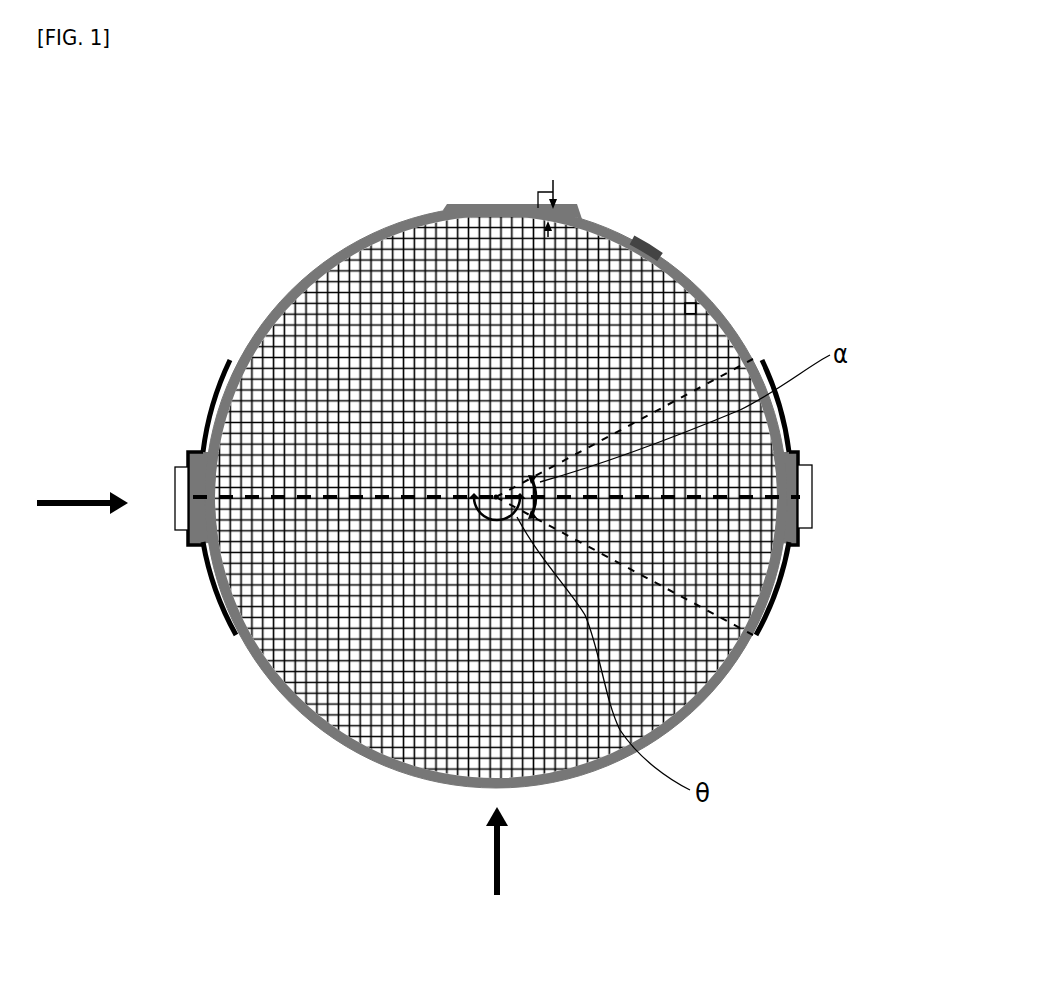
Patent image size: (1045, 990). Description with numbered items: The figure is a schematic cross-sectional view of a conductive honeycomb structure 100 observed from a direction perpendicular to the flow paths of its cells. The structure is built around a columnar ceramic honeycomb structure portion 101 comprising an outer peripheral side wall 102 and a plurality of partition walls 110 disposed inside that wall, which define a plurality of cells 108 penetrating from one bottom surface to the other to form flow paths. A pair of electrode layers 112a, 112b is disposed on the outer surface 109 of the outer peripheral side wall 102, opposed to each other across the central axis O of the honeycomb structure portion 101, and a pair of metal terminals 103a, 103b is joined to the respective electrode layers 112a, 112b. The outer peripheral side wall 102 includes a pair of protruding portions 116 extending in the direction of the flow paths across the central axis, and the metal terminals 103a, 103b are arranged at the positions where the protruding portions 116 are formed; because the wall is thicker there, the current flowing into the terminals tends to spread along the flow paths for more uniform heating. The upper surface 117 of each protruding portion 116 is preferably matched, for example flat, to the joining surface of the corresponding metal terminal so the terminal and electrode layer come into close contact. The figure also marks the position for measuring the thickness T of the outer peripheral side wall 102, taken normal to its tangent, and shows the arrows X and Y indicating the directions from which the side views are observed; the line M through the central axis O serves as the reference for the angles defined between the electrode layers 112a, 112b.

The honeycomb structure 100 is at (262, 129).
The honeycomb structure portion 101 is at (239, 332).
The outer peripheral side wall 102 is at (650, 254).
The metal terminal 103a is at (176, 483).
The metal terminal 103b is at (812, 490).
The cells 108 is at (685, 310).
The outer surface 109 is at (383, 228).
The partition walls 110 is at (443, 232).
The electrode layer 112a is at (215, 397).
The electrode layer 112b is at (783, 395).
The protruding portions 116 is at (198, 523).
The upper surface 117 is at (187, 533).
The center line M is at (295, 495).
The central axis O is at (504, 490).
The thickness T is at (555, 217).
The arrow X is at (82, 491).
The arrow Y is at (484, 851).